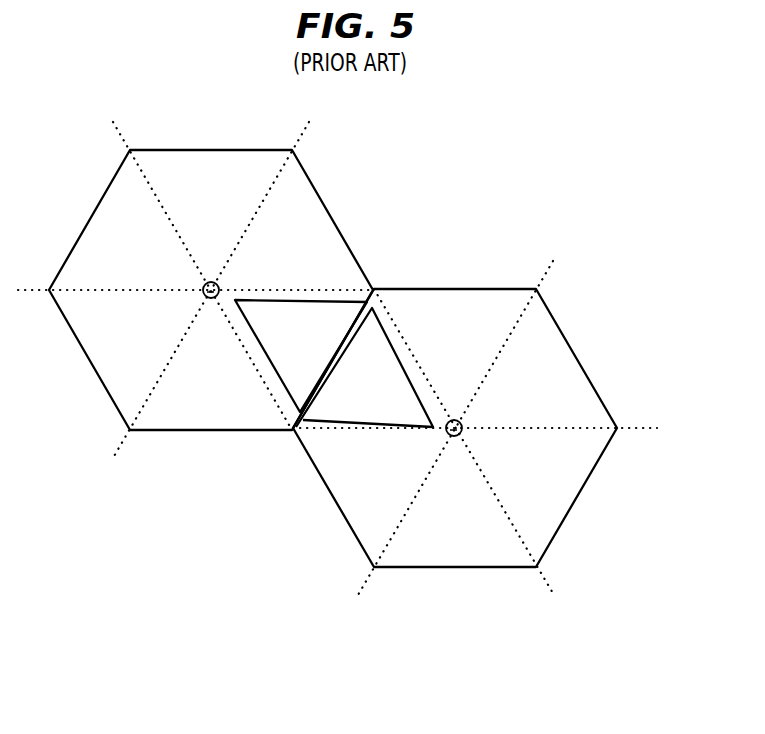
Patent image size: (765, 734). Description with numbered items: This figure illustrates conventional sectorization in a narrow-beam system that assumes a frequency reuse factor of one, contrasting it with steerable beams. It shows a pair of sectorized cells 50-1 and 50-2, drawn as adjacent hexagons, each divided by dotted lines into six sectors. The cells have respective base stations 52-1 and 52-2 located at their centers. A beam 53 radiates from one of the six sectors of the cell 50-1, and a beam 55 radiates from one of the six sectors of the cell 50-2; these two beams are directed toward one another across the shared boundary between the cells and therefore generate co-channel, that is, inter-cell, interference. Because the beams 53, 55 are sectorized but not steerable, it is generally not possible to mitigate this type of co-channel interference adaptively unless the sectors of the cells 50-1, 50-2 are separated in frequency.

The sectorized cell 50-1 is at (333, 220).
The sectorized cell 50-2 is at (577, 358).
The base station 52-1 is at (204, 295).
The base station 52-2 is at (462, 432).
The beam 53 is at (268, 360).
The beam 55 is at (393, 348).